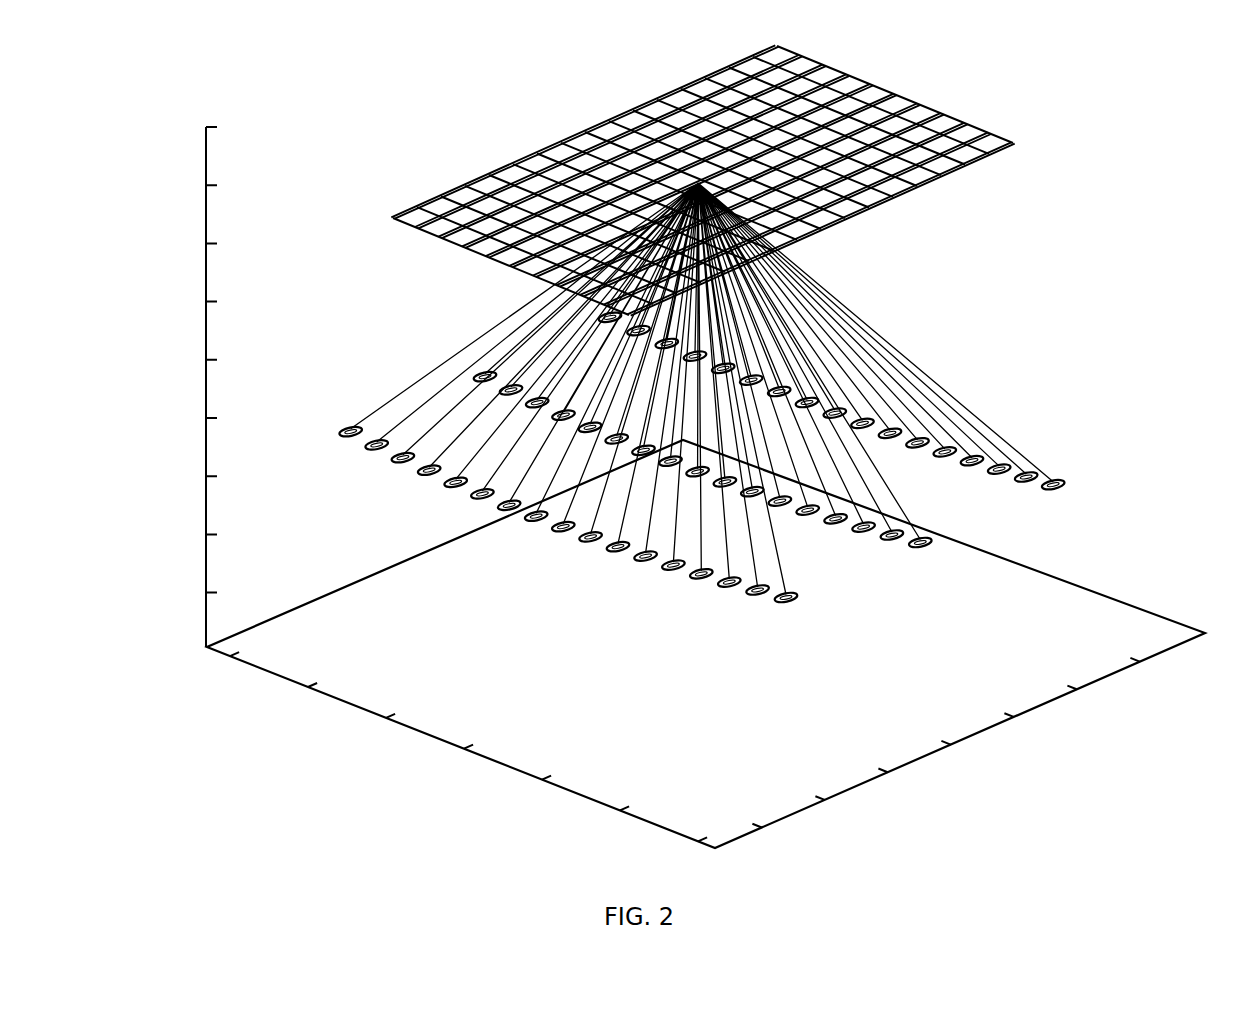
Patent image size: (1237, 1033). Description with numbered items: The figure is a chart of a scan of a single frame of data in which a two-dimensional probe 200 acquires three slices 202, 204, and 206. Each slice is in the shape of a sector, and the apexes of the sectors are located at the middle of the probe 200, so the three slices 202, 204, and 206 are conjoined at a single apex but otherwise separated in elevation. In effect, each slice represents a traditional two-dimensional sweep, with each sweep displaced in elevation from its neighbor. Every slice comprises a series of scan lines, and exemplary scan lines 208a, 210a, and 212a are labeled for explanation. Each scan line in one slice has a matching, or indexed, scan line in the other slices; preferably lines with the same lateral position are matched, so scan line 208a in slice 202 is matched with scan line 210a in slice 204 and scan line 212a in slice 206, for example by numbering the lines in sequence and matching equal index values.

The 2-D probe 200 is at (958, 120).
The slice 202 is at (567, 499).
The slice 204 is at (689, 443).
The slice 206 is at (795, 382).
The scan line 208a is at (327, 418).
The scan line 210a is at (440, 356).
The scan line 212a is at (532, 290).